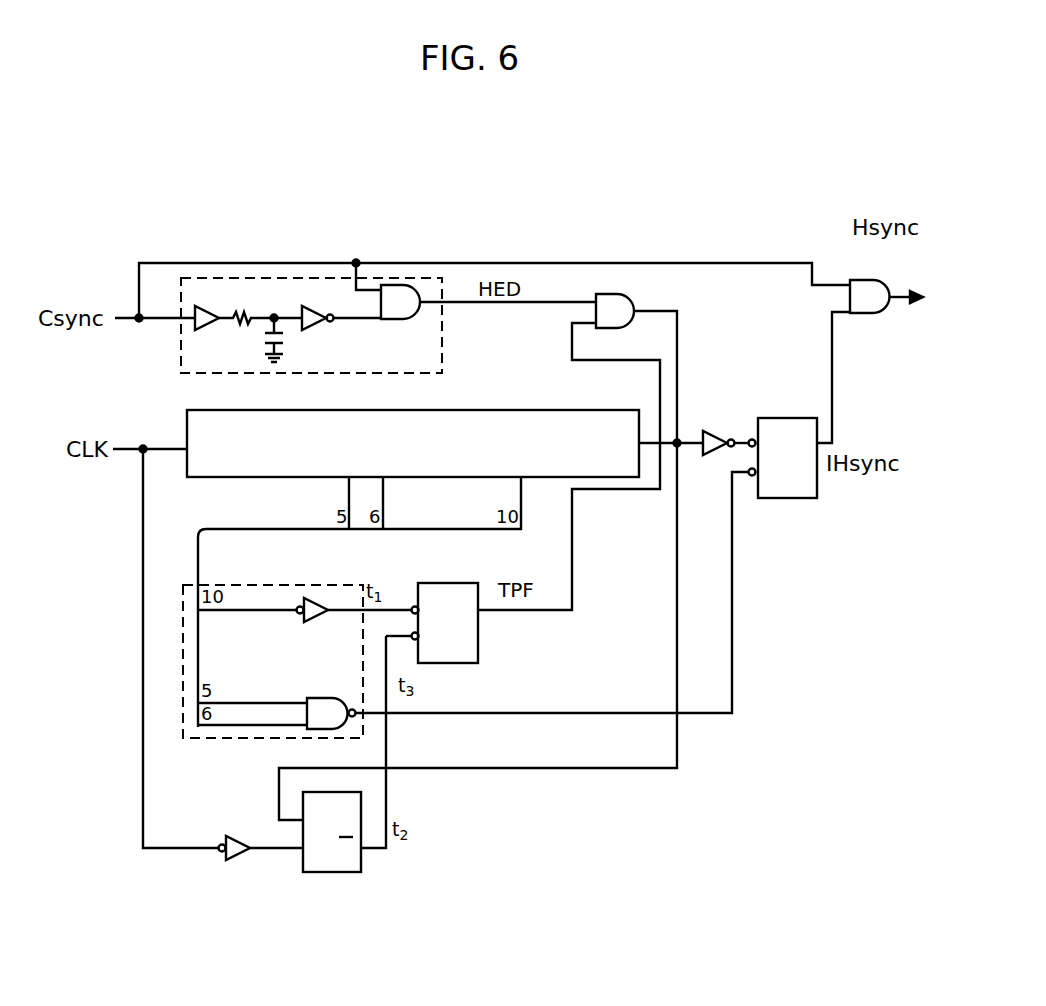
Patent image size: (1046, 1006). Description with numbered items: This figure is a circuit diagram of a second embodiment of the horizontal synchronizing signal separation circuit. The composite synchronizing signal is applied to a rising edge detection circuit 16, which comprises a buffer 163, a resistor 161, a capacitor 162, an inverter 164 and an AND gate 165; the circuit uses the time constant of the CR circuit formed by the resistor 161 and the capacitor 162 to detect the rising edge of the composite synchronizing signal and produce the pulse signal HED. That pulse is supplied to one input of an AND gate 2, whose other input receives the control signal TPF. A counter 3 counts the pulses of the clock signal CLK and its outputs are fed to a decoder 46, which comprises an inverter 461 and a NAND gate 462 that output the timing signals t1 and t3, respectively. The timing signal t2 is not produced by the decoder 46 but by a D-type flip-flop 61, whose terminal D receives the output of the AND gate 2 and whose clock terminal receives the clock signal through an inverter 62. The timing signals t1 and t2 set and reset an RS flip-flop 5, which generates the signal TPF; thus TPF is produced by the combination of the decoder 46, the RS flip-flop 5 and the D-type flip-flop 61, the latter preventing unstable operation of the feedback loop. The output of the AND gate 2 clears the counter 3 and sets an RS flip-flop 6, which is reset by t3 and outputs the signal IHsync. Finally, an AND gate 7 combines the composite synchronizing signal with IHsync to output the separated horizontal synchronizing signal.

The rising edge detection circuit 16 is at (450, 348).
The buffer 163 is at (203, 303).
The resistor 161 is at (233, 316).
The capacitor 162 is at (262, 337).
The inverter 164 is at (313, 326).
The AND gate 165 is at (403, 287).
The AND gate 2 is at (632, 303).
The counter 3 is at (553, 410).
The decoder 46 is at (183, 630).
The inverter 461 is at (317, 597).
The NAND gate 462 is at (317, 697).
The RS flip-flop 5 is at (455, 583).
The RS flip-flop 6 is at (786, 498).
The AND gate 7 is at (878, 314).
The D-type flip-flop 61 is at (362, 866).
The inverter 62 is at (238, 855).